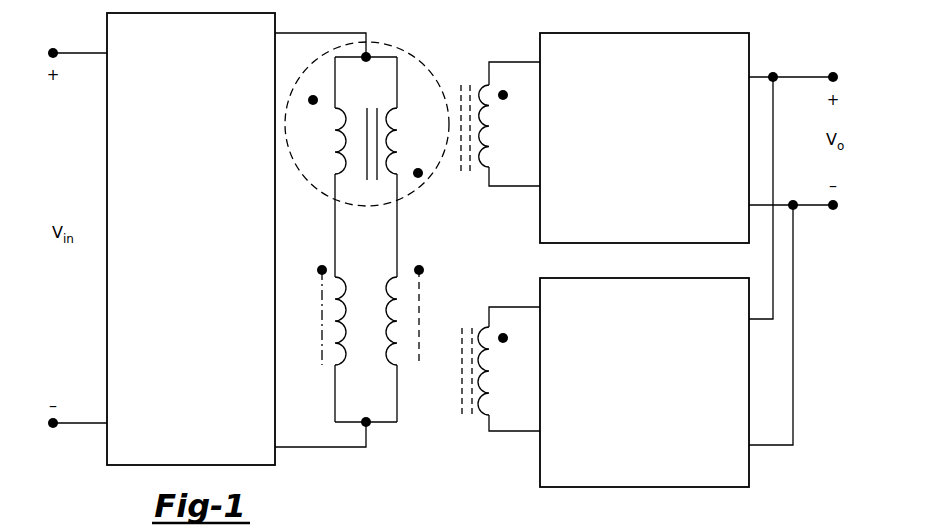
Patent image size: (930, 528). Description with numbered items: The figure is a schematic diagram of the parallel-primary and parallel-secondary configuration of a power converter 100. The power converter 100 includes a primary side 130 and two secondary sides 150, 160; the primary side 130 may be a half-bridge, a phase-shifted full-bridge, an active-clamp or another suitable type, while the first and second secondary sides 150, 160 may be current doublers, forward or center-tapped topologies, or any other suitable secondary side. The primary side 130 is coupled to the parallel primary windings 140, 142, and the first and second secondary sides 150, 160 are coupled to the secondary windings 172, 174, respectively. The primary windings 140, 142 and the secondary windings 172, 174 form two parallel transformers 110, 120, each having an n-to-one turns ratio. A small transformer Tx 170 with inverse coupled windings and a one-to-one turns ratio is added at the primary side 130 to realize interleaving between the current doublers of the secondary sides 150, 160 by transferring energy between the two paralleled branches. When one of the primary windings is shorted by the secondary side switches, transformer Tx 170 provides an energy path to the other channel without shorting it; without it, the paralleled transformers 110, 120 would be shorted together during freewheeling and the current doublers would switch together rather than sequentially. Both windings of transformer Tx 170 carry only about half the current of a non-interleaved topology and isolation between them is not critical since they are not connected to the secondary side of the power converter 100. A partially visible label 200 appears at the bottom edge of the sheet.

The power converter 100 is at (466, 52).
The first parallel transformer 110 is at (321, 380).
The second parallel transformer 120 is at (426, 380).
The primary side 130 is at (174, 427).
The first primary winding 140 is at (345, 309).
The second primary winding 142 is at (397, 300).
The first secondary side 150 is at (634, 219).
The second secondary side 160 is at (639, 464).
The transformer Tx 170 is at (311, 146).
The first secondary winding 172 is at (490, 90).
The second secondary winding 174 is at (485, 377).
The power converter (second embodiment) 200 is at (568, 524).